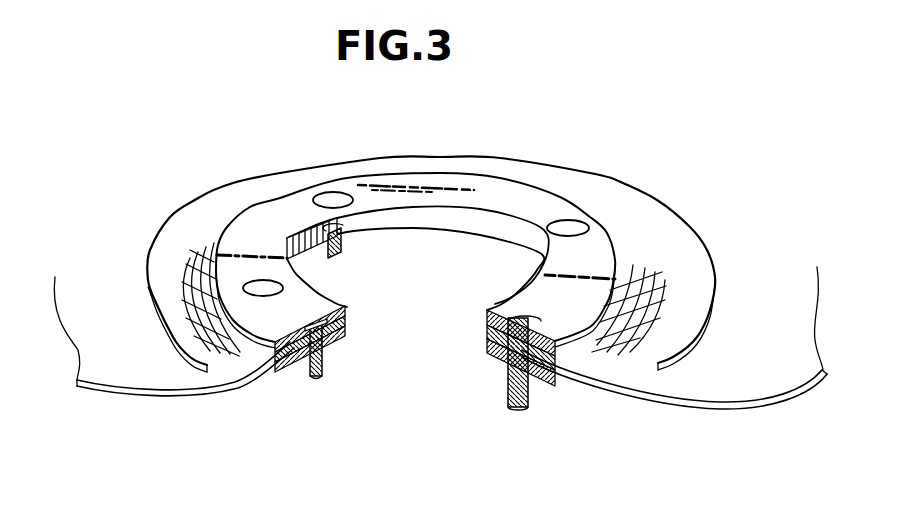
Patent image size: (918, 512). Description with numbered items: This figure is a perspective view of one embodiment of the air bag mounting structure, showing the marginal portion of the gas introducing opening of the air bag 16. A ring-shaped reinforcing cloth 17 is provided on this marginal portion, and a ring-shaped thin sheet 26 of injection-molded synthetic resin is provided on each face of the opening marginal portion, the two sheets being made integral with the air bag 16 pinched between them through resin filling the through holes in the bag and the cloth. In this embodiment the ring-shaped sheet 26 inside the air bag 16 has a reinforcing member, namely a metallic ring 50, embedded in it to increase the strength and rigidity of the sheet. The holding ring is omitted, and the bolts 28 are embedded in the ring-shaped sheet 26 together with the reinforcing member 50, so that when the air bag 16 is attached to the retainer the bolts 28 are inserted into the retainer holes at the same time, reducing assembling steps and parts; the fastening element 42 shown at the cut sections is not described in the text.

The air bag 16 is at (123, 378).
The reinforcing cloth 17 is at (161, 263).
The ring-shaped sheet 26 is at (277, 213).
The bolt 28 is at (337, 243).
The fastener / connector 42 is at (478, 238).
The metallic ring 50 is at (348, 326).